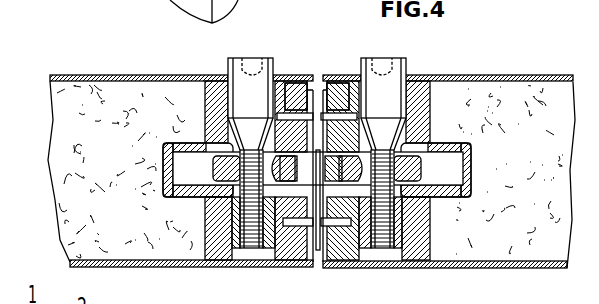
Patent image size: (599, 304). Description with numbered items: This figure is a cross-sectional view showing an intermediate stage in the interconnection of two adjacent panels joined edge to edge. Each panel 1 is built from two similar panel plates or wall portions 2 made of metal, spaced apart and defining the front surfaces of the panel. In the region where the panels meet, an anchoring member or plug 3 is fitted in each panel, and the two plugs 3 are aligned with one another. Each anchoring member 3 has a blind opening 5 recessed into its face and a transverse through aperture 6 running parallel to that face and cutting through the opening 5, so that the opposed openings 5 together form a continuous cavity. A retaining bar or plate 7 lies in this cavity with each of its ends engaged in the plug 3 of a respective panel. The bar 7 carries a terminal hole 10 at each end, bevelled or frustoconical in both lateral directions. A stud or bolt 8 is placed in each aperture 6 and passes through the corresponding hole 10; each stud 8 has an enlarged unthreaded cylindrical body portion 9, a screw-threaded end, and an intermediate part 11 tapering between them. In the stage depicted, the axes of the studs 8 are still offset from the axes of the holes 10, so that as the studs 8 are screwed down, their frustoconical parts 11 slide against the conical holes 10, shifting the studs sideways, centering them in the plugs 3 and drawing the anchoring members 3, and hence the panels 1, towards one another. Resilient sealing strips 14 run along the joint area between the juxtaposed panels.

The panel 1 is at (96, 60).
The panel plate or wall portion 2 is at (152, 75).
The anchoring member or plug 3 is at (218, 85).
The blind opening 5 is at (450, 179).
The transverse through aperture 6 is at (410, 120).
The retaining bar or plate 7 is at (288, 252).
The stud or bolt 8 is at (262, 248).
The enlarged cylindrical body portion 9 is at (358, 62).
The terminal hole 10 is at (360, 235).
The intermediate tapering part 11 is at (205, 133).
The resilient sealing strip 14 is at (318, 220).